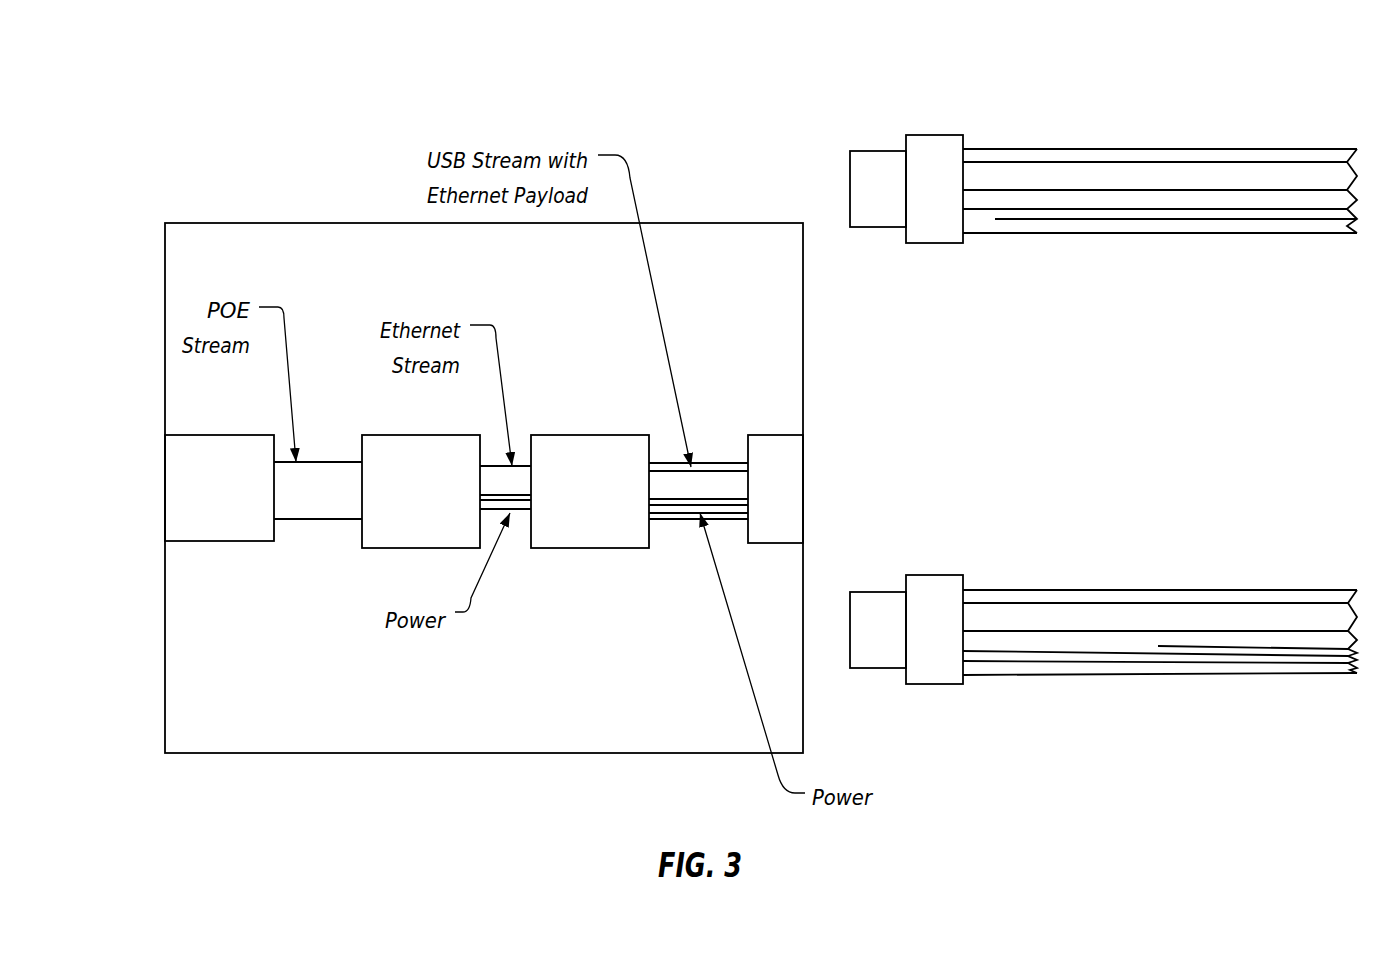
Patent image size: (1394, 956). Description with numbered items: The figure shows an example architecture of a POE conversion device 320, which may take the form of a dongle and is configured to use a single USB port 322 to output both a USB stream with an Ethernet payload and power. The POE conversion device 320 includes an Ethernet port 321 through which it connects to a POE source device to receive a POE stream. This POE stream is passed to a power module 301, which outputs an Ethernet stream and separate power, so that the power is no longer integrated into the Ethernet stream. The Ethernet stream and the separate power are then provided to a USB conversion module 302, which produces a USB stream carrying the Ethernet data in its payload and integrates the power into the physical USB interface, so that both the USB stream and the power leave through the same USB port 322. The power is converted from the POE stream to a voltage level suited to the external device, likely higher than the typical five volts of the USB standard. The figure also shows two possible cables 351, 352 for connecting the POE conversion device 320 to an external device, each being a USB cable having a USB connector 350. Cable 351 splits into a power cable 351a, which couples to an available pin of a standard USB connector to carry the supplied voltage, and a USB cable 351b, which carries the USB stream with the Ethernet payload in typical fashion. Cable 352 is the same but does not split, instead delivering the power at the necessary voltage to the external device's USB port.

The POE conversion device 320 is at (128, 191).
The Ethernet port 321 is at (238, 500).
The power module 301 is at (440, 500).
The USB conversion module 302 is at (609, 500).
The USB port 322 is at (786, 470).
The USB connector 350 is at (946, 171).
The cable 352 is at (1103, 349).
The cable 351 is at (1103, 640).
The USB cable 351b is at (1328, 590).
The power cable 351a is at (1291, 678).